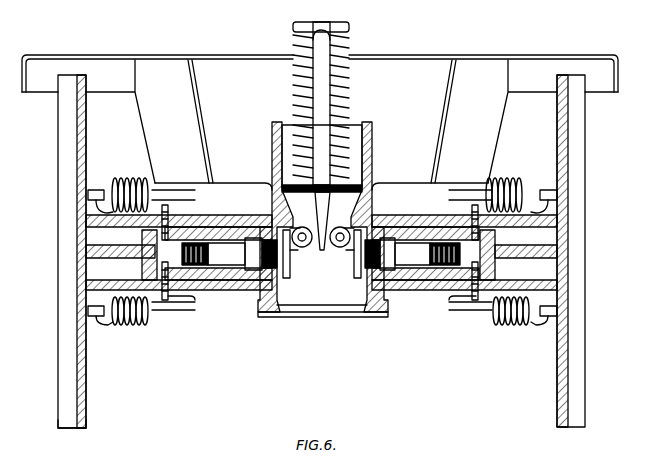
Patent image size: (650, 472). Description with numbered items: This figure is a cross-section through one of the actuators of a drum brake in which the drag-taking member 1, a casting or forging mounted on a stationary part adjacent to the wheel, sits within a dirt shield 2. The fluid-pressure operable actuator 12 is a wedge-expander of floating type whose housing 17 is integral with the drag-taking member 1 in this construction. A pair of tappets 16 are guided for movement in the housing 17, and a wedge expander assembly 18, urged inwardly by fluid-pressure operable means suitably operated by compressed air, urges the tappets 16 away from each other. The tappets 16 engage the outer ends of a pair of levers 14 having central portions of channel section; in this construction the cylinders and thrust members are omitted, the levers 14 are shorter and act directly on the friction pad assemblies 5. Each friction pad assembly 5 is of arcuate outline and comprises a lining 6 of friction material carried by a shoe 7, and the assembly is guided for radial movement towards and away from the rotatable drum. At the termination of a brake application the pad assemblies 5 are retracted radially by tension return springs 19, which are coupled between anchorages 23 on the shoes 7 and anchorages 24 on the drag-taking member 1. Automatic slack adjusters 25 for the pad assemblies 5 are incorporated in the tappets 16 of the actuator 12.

The drag-taking member 1 is at (248, 215).
The dirt shield 2 is at (470, 57).
The friction pad assembly 5 is at (72, 352).
The lining 6 is at (68, 178).
The shoe 7 is at (82, 213).
The fluid-pressure operable actuator 12 is at (372, 130).
The lever 14 is at (100, 250).
The tappet 16 is at (180, 303).
The housing 17 is at (373, 190).
The wedge expander assembly 18 is at (338, 152).
The tension return spring 19 is at (146, 186).
The anchorage 23 is at (96, 188).
The anchorage 24 is at (175, 198).
The automatic slack adjuster 25 is at (226, 262).